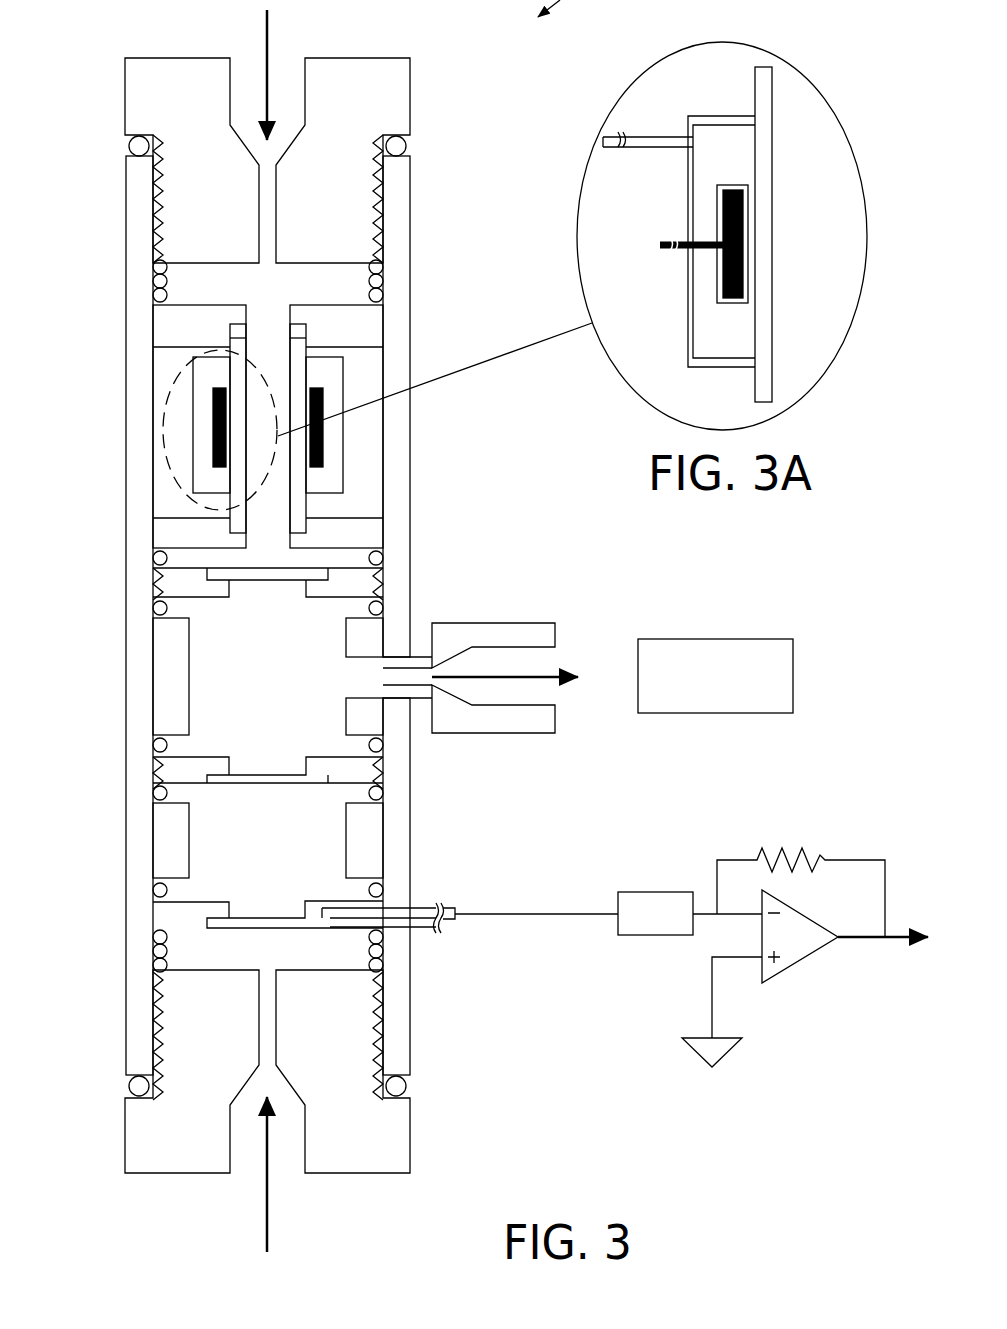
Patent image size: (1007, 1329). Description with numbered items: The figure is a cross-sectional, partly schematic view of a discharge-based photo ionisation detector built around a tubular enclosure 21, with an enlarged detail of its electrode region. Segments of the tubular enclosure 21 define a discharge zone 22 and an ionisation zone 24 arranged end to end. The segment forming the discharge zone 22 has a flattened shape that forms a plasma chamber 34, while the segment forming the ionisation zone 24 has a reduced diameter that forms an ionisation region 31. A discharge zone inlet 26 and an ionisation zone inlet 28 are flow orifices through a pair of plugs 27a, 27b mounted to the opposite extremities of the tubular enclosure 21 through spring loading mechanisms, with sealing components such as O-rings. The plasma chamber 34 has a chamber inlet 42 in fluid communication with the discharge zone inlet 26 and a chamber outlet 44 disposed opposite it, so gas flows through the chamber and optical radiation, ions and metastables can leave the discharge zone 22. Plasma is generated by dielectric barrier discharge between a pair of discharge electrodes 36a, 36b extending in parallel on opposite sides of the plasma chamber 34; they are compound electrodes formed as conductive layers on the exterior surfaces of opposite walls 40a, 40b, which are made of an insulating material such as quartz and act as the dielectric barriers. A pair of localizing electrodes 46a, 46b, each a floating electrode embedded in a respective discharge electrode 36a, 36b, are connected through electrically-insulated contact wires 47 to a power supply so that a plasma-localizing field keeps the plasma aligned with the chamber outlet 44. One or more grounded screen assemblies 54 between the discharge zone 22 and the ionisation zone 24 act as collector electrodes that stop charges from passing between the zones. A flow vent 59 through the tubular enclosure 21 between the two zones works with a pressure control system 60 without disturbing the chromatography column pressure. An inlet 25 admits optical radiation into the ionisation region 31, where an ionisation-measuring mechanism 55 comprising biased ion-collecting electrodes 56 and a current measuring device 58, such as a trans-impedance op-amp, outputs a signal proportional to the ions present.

In FIG. 3, the tubular enclosure 21 is at (125, 226).
In FIG. 3, the discharge zone 22 is at (104, 315).
In FIG. 3, the ionisation zone 24 is at (102, 830).
In FIG. 3, the inlet 25 is at (252, 760).
In FIG. 3, the discharge zone inlet 26 is at (291, 65).
In FIG. 3, the plug 27a is at (140, 57).
In FIG. 3, the plug 27b is at (125, 1148).
In FIG. 3, the ionisation zone inlet 28 is at (287, 1160).
In FIG. 3, the ionisation region 31 is at (288, 852).
In FIG. 3, the plasma chamber 34 is at (268, 498).
In FIG. 3, the discharge electrode 36a is at (205, 425).
In FIG. 3, the discharge electrode 36b is at (336, 442).
In FIG. 3A, the discharge electrode 36b is at (722, 142).
In FIG. 3, the wall 40a is at (237, 375).
In FIG. 3, the wall 40b is at (300, 375).
In FIG. 3A, the wall 40b is at (760, 177).
In FIG. 3, the chamber inlet 42 is at (270, 316).
In FIG. 3, the chamber outlet 44 is at (265, 534).
In FIG. 3, the localizing electrode 46a is at (213, 455).
In FIG. 3, the localizing electrode 46b is at (323, 455).
In FIG. 3A, the localizing electrode 46b is at (745, 268).
In FIG. 3A, the contact wire 47 is at (658, 244).
In FIG. 3, the screen assembly 54 is at (275, 581).
In FIG. 3, the ionisation-measuring mechanism 55 is at (558, 1000).
In FIG. 3, the ion-collecting electrode 56 is at (288, 930).
In FIG. 3, the current measuring device 58 is at (814, 976).
In FIG. 3, the flow vent 59 is at (543, 662).
In FIG. 3, the pressure control system 60 is at (764, 638).